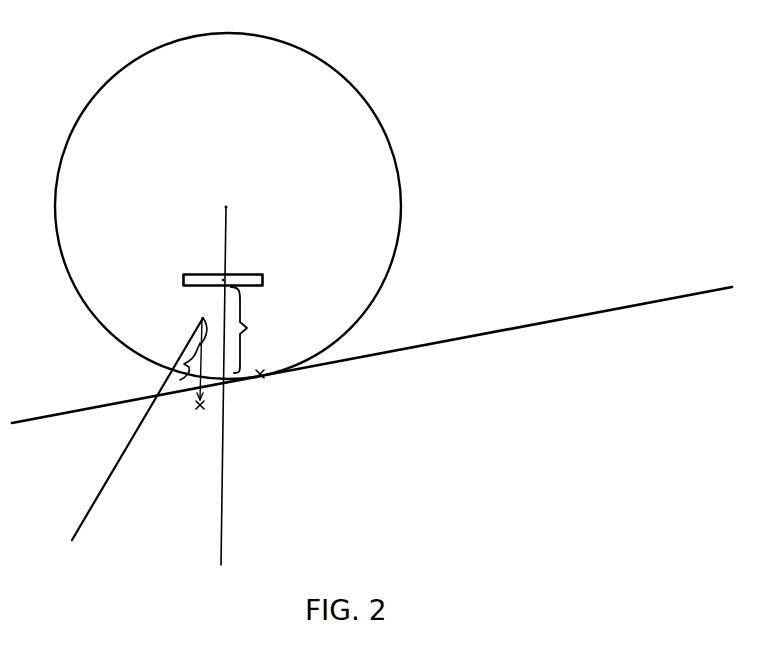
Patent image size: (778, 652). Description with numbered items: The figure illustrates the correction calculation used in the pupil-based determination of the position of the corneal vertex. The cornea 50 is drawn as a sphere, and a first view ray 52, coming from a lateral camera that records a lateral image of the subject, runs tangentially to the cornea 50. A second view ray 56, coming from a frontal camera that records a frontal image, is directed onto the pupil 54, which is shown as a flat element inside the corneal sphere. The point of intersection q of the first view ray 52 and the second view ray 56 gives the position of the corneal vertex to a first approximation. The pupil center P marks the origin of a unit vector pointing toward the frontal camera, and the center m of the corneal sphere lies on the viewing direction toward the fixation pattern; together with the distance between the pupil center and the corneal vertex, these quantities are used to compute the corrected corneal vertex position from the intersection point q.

The cornea 50 is at (378, 294).
The first view ray 52 is at (603, 312).
The pupil 54 is at (226, 273).
The second view ray 56 is at (88, 507).
The center of the corneal sphere m is at (228, 207).
The pupil center P is at (222, 278).
The point of intersection q is at (158, 397).